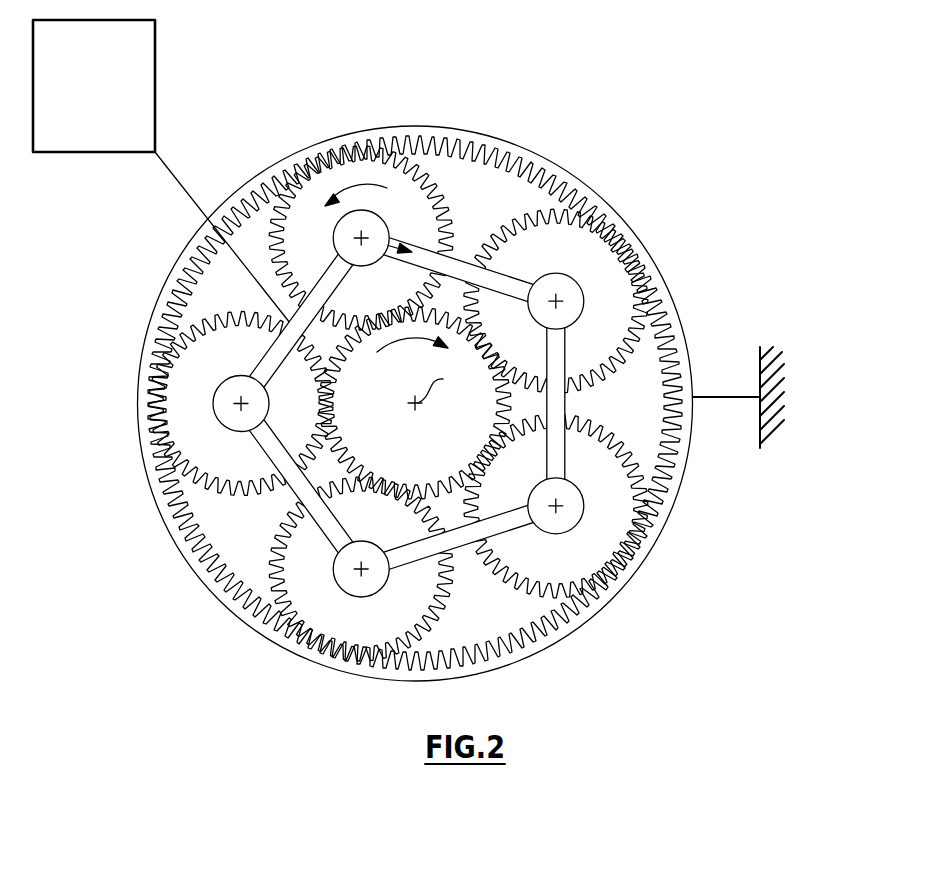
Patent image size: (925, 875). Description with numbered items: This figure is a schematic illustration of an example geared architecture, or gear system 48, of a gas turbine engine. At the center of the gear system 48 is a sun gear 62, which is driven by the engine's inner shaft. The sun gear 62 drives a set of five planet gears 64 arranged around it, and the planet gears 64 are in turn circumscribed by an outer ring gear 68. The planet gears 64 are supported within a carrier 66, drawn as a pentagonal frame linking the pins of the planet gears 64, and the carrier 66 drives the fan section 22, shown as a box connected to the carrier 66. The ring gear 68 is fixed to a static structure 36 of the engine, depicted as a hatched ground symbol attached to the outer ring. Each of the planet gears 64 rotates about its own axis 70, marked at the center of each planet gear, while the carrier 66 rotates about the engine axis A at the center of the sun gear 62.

The fan section 22 is at (110, 98).
The static structure 36 is at (772, 378).
The gear system 48 is at (519, 105).
The sun gear 62 is at (465, 453).
The planet gears 64 is at (415, 187).
The carrier 66 is at (290, 323).
The ring gear 68 is at (633, 563).
The axis 70 is at (361, 238).